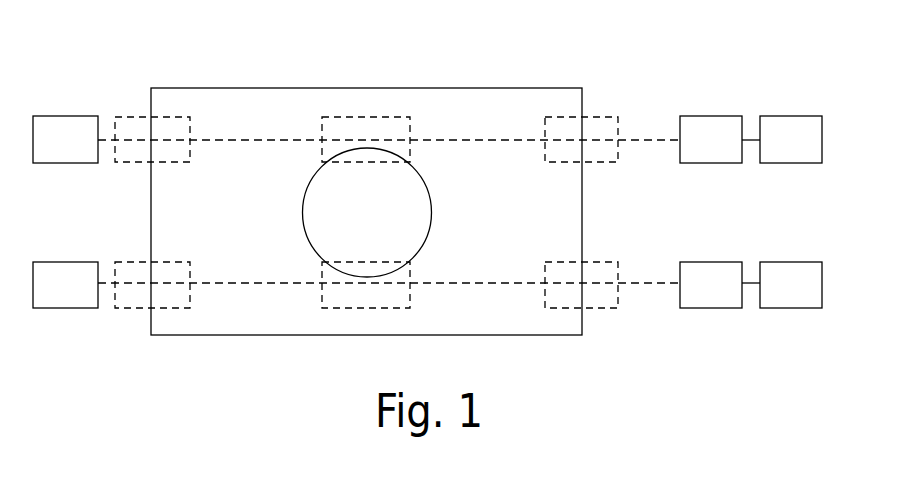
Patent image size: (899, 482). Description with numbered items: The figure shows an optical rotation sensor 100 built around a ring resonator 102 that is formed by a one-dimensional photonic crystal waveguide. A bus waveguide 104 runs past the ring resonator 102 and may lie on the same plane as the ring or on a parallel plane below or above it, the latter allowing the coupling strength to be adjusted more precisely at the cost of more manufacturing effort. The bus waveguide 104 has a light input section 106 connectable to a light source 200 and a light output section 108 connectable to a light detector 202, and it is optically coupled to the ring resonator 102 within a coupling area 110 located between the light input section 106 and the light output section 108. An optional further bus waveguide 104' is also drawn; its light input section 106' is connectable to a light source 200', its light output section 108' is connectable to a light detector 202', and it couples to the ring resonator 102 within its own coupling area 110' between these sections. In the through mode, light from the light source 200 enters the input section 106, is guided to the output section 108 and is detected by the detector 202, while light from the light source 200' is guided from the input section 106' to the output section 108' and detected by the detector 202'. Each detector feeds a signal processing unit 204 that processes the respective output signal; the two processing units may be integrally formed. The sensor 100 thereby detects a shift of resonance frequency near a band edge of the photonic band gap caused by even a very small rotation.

The optical rotation sensor 100 is at (705, 62).
The ring resonator 102 is at (428, 185).
The bus waveguide 104 is at (389, 336).
The further bus waveguide 104' is at (389, 81).
The light input section 106 is at (173, 241).
The light input section 106' is at (170, 93).
The light output section 108 is at (608, 244).
The light output section 108' is at (604, 96).
The coupling area 110 is at (316, 265).
The coupling area 110' is at (366, 93).
The light source 200 is at (65, 285).
The light source 200' is at (65, 139).
The light detector 202 is at (711, 285).
The light detector 202' is at (711, 139).
The signal processing unit 204 is at (782, 212).